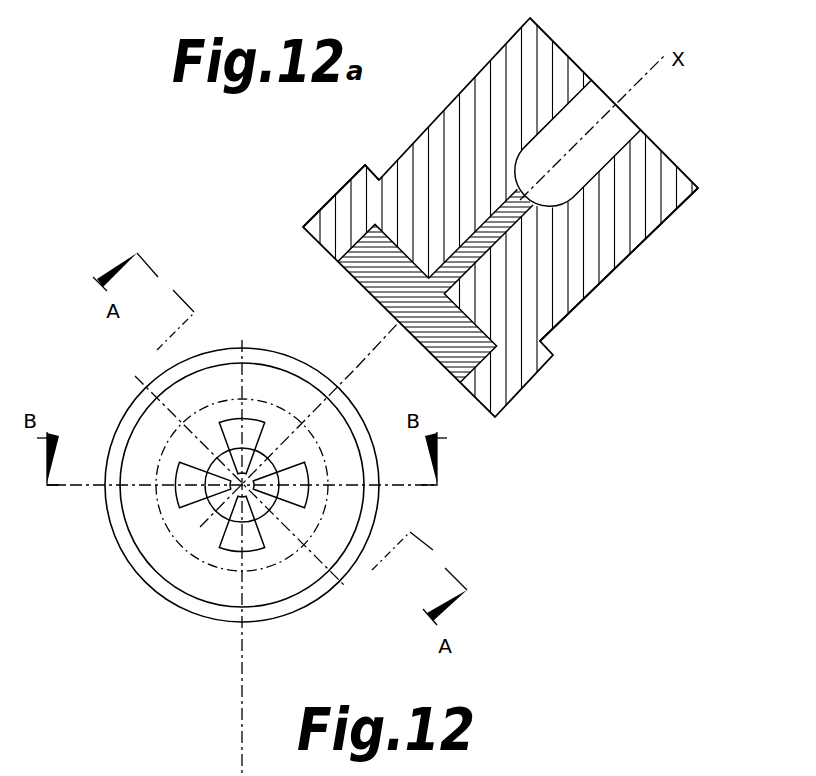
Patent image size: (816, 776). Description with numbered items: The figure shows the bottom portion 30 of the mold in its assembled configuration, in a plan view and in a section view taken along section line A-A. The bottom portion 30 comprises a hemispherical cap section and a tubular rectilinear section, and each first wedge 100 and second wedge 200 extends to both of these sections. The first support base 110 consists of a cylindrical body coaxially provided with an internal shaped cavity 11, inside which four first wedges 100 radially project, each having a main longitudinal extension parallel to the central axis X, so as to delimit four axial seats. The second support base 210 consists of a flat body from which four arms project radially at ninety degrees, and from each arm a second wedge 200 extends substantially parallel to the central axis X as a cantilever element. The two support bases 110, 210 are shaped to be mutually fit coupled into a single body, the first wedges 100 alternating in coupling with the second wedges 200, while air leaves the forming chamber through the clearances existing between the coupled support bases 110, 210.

In FIG. 12A, the cavity 11 is at (579, 111).
In FIG. 12A, the bottom portion 30 is at (604, 312).
In FIG. 12A, the first wedge 100 is at (635, 218).
In FIG. 12, the first wedge 100 is at (192, 518).
In FIG. 12A, the first support base 110 is at (331, 223).
In FIG. 12, the second wedge 200 is at (135, 398).
In FIG. 12A, the second support base 210 is at (455, 370).
In FIG. 12, the second support base 210 is at (225, 597).